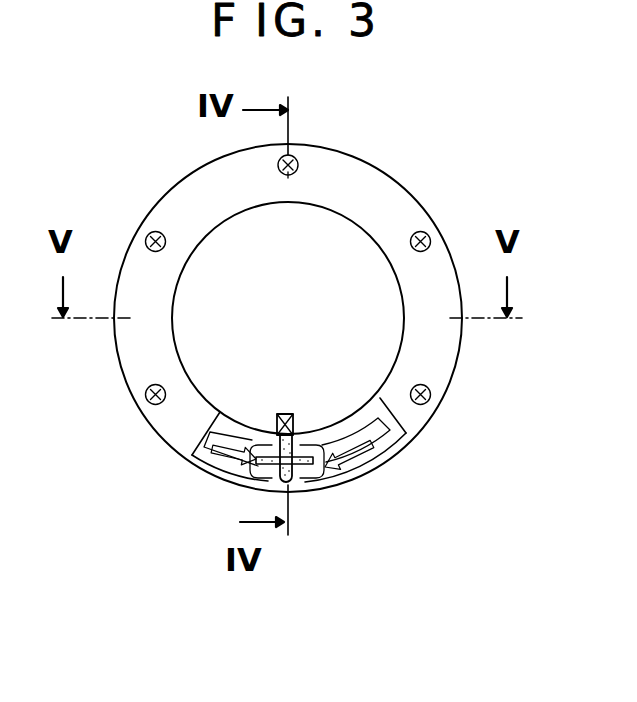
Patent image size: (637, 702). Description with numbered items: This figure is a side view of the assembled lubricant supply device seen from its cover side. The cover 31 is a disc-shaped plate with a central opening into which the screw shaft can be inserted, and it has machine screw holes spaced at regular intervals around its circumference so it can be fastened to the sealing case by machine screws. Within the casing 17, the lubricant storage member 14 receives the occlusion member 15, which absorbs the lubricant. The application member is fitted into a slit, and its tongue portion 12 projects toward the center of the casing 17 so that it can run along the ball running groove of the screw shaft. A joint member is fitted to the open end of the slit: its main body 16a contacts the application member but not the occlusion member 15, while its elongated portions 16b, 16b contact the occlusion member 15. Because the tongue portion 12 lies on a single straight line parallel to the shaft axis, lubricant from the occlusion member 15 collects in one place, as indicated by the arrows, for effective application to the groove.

The cover 31 is at (438, 375).
The tongue portion 12 is at (290, 412).
The casing 17 is at (340, 443).
The lubricant storage member 14 is at (372, 440).
The occlusion member 15 is at (326, 472).
The main body of joint member 16a is at (371, 467).
The elongated portions of joint member 16b is at (255, 480).